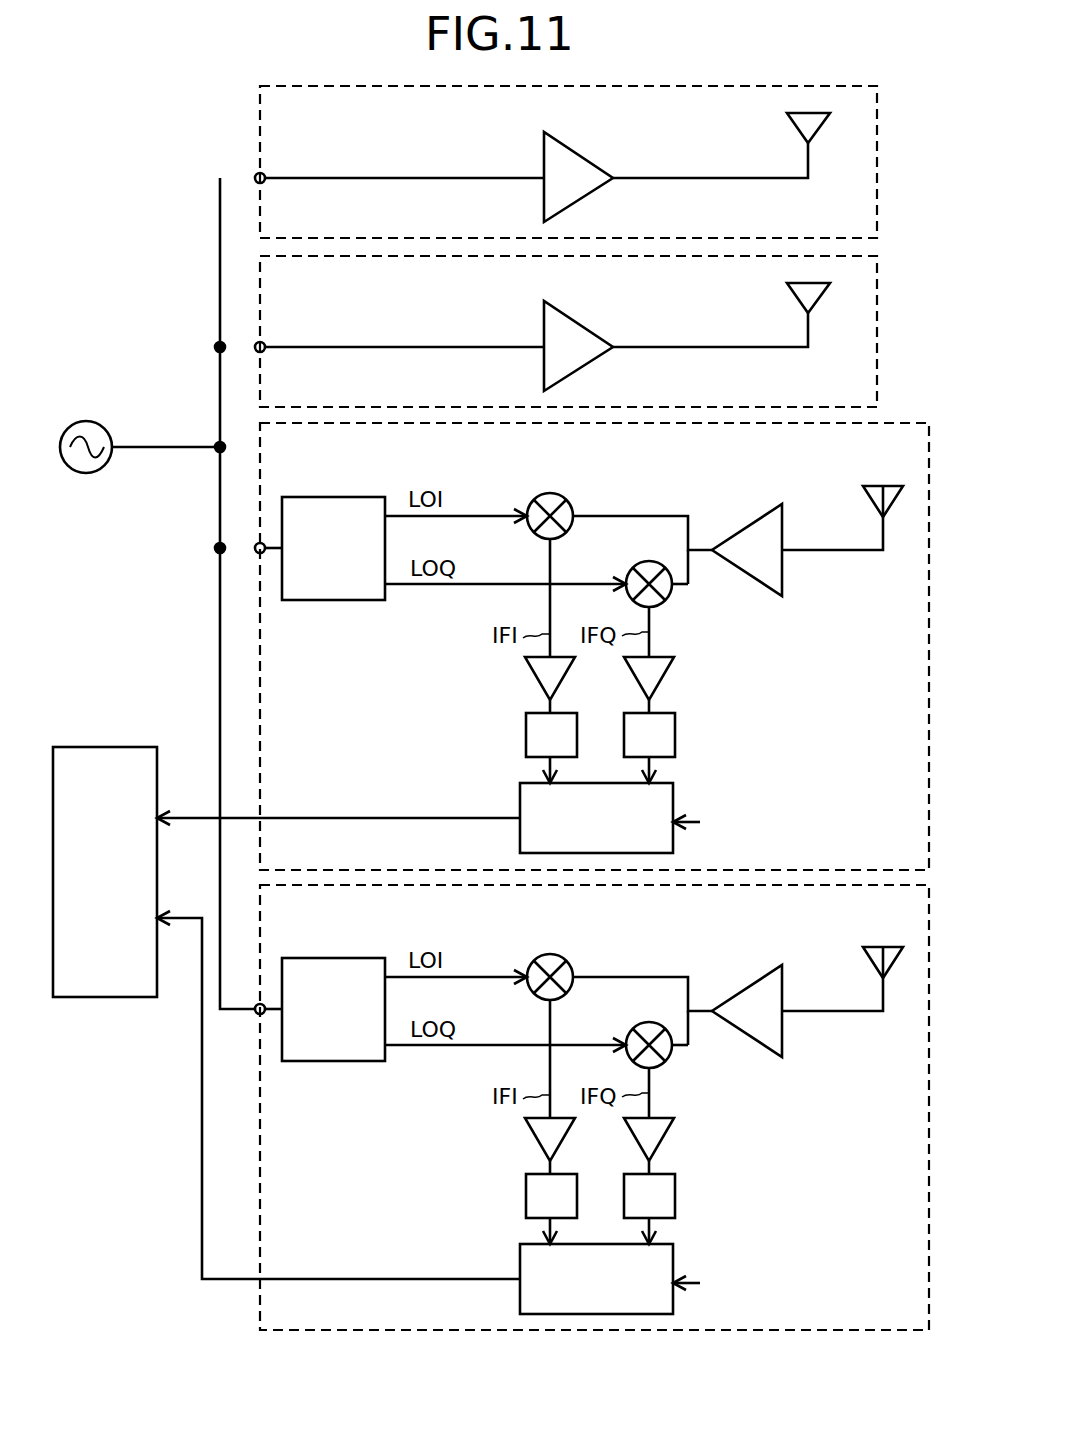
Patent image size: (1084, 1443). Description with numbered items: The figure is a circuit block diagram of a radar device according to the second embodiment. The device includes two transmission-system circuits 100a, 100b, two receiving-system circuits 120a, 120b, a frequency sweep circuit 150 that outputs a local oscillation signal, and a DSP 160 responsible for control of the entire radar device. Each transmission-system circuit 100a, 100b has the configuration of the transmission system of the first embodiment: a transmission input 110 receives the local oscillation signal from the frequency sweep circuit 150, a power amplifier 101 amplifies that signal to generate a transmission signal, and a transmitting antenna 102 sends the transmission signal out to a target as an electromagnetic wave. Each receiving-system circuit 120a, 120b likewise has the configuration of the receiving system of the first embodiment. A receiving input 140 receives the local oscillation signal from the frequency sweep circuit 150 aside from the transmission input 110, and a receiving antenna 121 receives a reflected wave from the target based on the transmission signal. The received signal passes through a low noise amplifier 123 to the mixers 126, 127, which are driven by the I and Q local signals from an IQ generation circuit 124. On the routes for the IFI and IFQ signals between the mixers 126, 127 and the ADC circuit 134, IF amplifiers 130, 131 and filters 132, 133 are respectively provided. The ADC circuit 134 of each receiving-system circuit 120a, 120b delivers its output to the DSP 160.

The transmission-system circuit 100a is at (877, 160).
The transmission-system circuit 100b is at (877, 290).
The power amplifier 101 is at (580, 152).
The transmitting antenna 102 is at (798, 128).
The transmission input 110 is at (263, 173).
The receiving-system circuit 120a is at (898, 420).
The receiving-system circuit 120b is at (672, 1334).
The receiving antenna 121 is at (890, 486).
The low noise amplifier 123 is at (756, 517).
The IQ generation circuit 124 is at (336, 497).
The mixer 126 is at (574, 505).
The mixer 127 is at (666, 598).
The IF amplifier 130 is at (532, 668).
The IF amplifier 131 is at (668, 668).
The filter 132 is at (526, 735).
The filter 133 is at (675, 735).
The analog-to-digital conversion circuit 134 is at (674, 794).
The receiving input 140 is at (262, 554).
The frequency sweep circuit 150 is at (86, 474).
The digital signal processor 160 is at (104, 746).